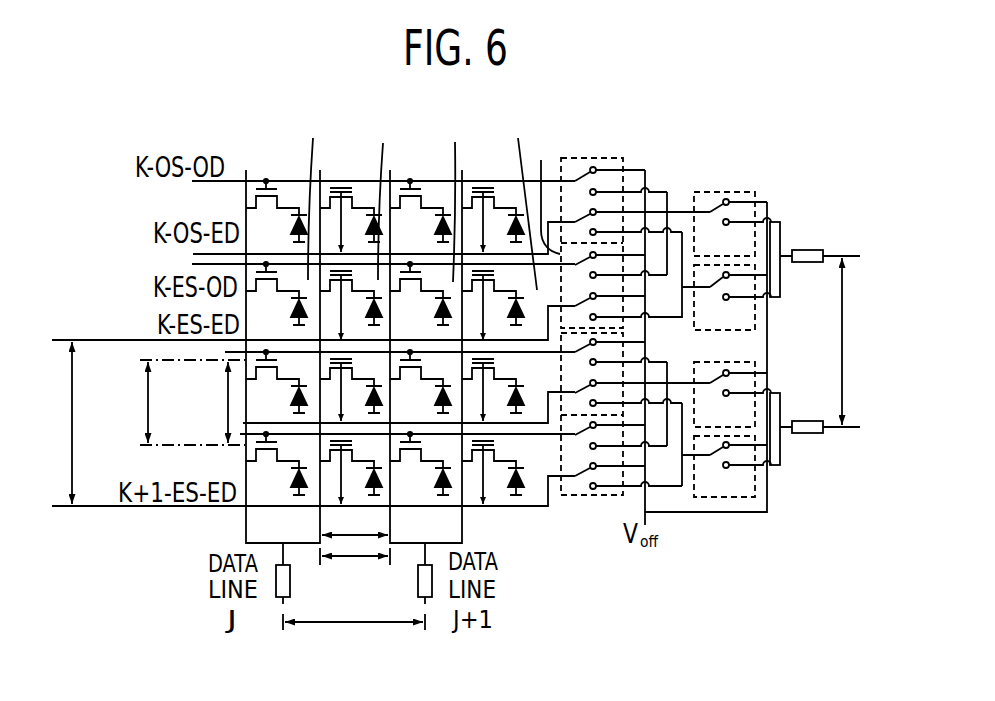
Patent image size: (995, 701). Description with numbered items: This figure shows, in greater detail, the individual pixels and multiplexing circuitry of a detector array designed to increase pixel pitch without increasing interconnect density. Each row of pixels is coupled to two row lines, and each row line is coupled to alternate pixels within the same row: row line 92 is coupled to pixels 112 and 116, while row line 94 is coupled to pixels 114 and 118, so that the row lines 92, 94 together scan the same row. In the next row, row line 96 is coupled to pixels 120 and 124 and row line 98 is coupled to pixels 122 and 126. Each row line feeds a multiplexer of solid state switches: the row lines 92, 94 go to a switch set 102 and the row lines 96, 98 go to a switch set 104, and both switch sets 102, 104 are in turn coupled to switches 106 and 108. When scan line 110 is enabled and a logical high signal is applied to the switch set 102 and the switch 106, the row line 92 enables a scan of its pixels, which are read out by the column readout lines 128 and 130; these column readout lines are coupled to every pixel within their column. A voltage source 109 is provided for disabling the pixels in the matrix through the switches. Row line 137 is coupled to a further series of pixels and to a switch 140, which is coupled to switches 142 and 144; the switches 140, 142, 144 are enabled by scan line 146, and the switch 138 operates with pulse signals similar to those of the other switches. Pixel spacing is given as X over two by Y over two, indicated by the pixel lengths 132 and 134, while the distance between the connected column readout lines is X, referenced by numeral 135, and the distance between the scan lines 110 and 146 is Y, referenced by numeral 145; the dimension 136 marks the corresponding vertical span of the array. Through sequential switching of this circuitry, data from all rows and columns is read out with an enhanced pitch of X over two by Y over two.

The row line 92 is at (192, 182).
The row line 94 is at (193, 254).
The row line 96 is at (192, 265).
The row line 98 is at (192, 341).
The switch set 102 is at (593, 158).
The switch set 104 is at (544, 194).
The switch 106 is at (735, 192).
The switch 108 is at (757, 315).
The voltage source 109 is at (645, 523).
The scan line 110 is at (827, 250).
The pixel 112 is at (287, 190).
The pixel 114 is at (368, 192).
The pixel 116 is at (430, 193).
The pixel 118 is at (508, 195).
The pixel 120 is at (314, 195).
The pixel 122 is at (386, 197).
The pixel 124 is at (456, 198).
The pixel 126 is at (513, 200).
The column readout line 128 is at (283, 604).
The column readout line 130 is at (425, 604).
The pixel length by row (X/2) 132 is at (353, 558).
The pixel length by column (Y/2) 134 is at (189, 402).
The distance X between column readout lines 135 is at (350, 624).
The pixel pitch Y 136 is at (73, 423).
The row line 137 is at (223, 508).
The switch 138 is at (563, 497).
The switch 140 is at (577, 487).
The switch 142 is at (712, 364).
The switch 144 is at (750, 480).
The distance Y between scan lines 145 is at (842, 362).
The scan line 146 is at (825, 430).